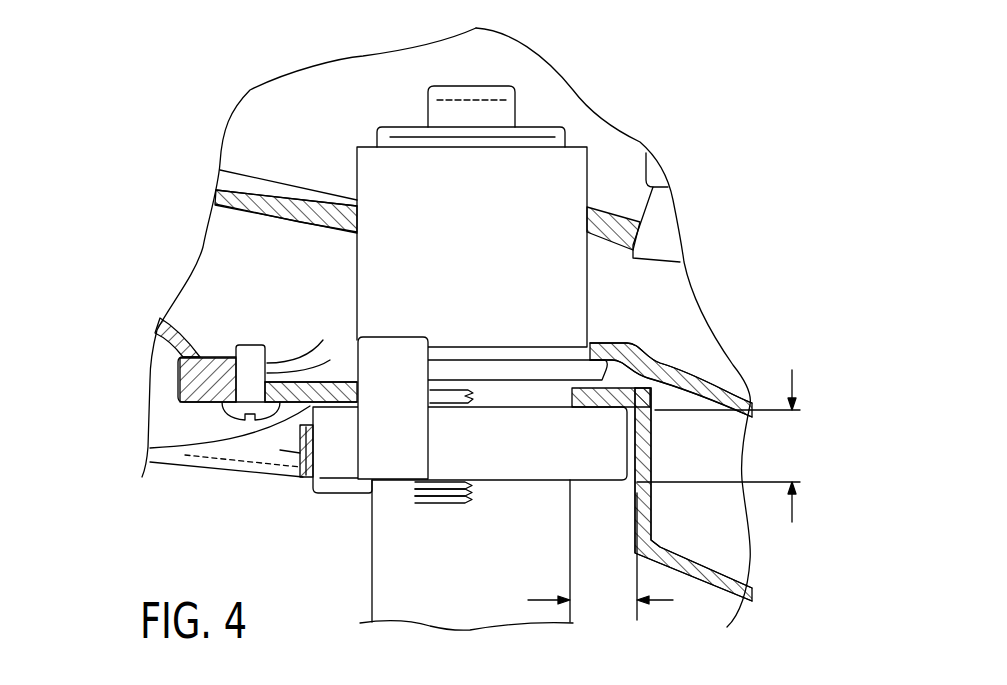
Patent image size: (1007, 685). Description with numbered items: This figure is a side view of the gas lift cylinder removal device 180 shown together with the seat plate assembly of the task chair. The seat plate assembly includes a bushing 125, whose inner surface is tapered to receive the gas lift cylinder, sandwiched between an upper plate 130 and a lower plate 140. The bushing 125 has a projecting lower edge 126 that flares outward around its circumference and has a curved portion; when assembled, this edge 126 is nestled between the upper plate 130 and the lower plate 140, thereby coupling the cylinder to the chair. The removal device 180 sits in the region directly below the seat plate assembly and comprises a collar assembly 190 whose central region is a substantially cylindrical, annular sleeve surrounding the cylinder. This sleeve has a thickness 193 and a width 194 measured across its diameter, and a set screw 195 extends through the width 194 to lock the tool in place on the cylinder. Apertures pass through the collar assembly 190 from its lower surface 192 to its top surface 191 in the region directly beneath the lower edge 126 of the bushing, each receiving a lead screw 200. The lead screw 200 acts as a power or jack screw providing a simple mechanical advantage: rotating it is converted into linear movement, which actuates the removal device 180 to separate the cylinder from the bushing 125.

The bushing 125 is at (570, 167).
The projecting lower edge 126 is at (653, 370).
The upper plate 130 is at (323, 340).
The lower plate 140 is at (240, 441).
The gas lift cylinder removal device 180 is at (185, 192).
The collar assembly 190 is at (203, 494).
The top surface 191 is at (532, 405).
The lower surface 192 is at (500, 482).
The thickness 193 is at (792, 445).
The width 194 is at (600, 603).
The set screw 195 is at (297, 450).
The lead screw 200 is at (446, 503).